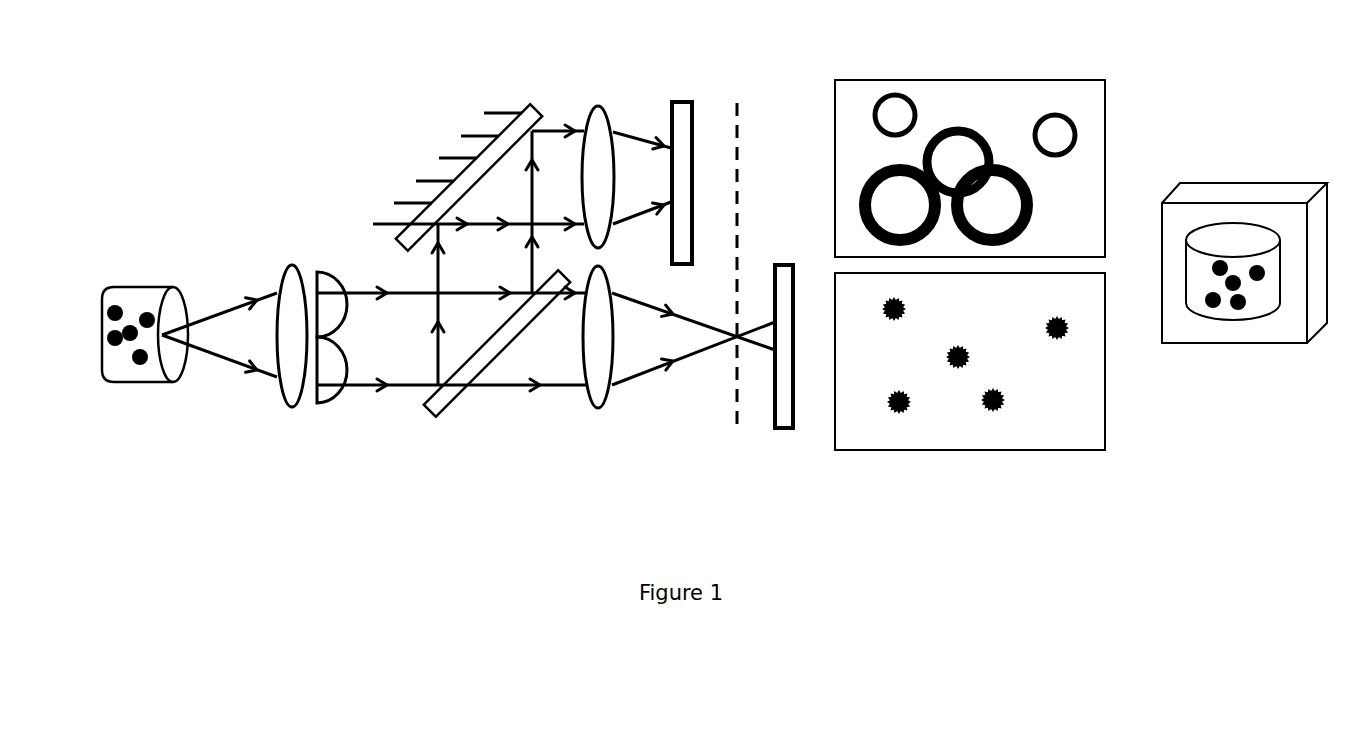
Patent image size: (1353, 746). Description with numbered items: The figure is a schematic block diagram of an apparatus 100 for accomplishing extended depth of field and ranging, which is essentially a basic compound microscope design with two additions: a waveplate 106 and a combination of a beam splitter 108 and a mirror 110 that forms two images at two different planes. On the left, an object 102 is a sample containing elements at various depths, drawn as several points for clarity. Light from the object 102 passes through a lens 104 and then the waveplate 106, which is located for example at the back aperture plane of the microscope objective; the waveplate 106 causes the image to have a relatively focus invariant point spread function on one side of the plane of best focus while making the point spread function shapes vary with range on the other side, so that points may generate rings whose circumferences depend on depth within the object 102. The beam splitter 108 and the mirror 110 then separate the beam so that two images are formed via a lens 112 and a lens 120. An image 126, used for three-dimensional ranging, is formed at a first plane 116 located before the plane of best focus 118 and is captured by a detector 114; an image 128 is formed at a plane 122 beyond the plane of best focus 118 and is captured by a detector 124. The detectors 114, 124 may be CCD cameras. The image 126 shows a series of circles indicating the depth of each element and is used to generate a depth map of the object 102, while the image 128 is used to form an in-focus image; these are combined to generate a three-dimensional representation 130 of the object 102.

The apparatus 100 is at (382, 133).
The object 102 is at (145, 316).
The lens 104 is at (278, 322).
The waveplate 106 is at (339, 352).
The beam splitter 108 is at (497, 353).
The mirror 110 is at (468, 159).
The lens 112 is at (597, 159).
The detector 114 is at (680, 163).
The first plane 116 is at (672, 120).
The plane of best focus 118 is at (731, 244).
The lens 120 is at (600, 354).
The plane 122 is at (770, 392).
The detector 124 is at (786, 370).
The image 126 is at (970, 151).
The image 128 is at (970, 382).
The three-dimensional representation 130 is at (1244, 246).